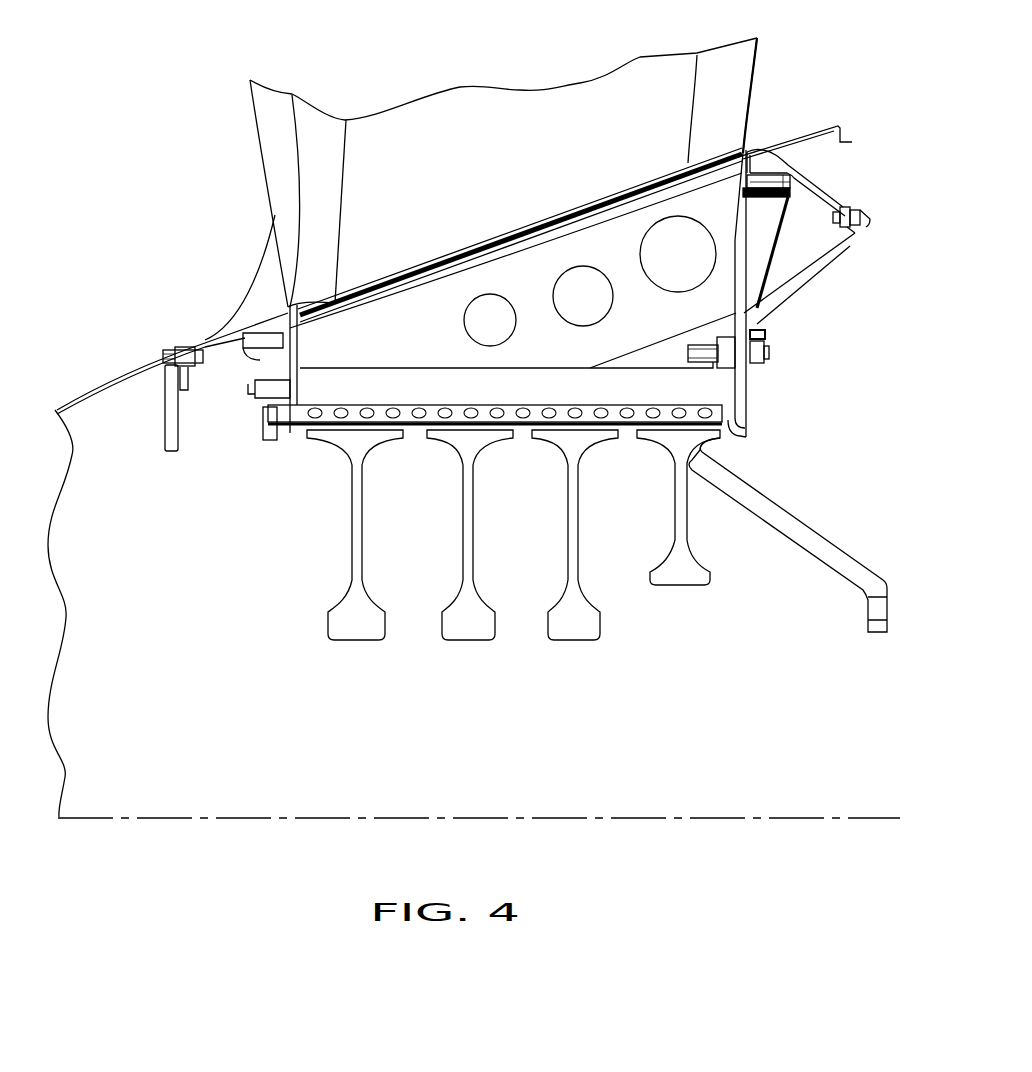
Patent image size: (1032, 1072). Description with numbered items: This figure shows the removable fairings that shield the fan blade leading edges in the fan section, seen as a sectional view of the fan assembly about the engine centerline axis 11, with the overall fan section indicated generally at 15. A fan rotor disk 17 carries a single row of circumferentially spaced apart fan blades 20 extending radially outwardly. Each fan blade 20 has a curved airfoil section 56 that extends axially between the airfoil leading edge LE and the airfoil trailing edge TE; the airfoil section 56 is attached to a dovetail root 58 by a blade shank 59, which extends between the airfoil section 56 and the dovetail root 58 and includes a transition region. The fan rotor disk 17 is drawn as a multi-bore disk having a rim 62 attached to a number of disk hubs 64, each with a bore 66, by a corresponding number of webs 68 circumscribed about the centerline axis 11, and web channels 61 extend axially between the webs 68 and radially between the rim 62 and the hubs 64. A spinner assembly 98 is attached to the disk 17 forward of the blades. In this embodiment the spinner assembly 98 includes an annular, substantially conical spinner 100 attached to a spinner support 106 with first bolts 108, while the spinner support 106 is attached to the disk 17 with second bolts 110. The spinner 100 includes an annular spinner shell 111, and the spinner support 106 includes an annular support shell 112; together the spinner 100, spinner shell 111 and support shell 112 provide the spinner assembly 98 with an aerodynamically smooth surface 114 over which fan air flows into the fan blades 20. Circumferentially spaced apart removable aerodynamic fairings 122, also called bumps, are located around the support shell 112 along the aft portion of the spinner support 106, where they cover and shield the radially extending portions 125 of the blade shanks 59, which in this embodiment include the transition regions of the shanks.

The centerline axis 11 is at (442, 817).
The gas turbine engine assembly 15 is at (265, 538).
The fan rotor disk 17 is at (612, 405).
The fan blades 20 is at (637, 53).
The curved airfoil section 56 is at (457, 88).
The dovetail root 58 is at (450, 387).
The blade shank 59 is at (510, 277).
The web channels 61 is at (496, 535).
The rim 62 is at (352, 443).
The disk hubs 64 is at (358, 625).
The bores 66 is at (357, 640).
The webs 68 is at (470, 512).
The spinner assembly 98 is at (140, 358).
The spinner 100 is at (120, 372).
The spinner support 106 is at (233, 375).
The first bolts 108 is at (187, 350).
The second bolts 110 is at (247, 430).
The spinner shell 111 is at (112, 373).
The support shell 112 is at (135, 392).
The aerodynamically smooth surface 114 is at (117, 350).
The removable aerodynamic fairings 122 is at (253, 277).
The radially extending portions of the blade shanks 125 is at (288, 300).
The airfoil leading edge LE is at (260, 130).
The airfoil trailing edge TE is at (747, 92).